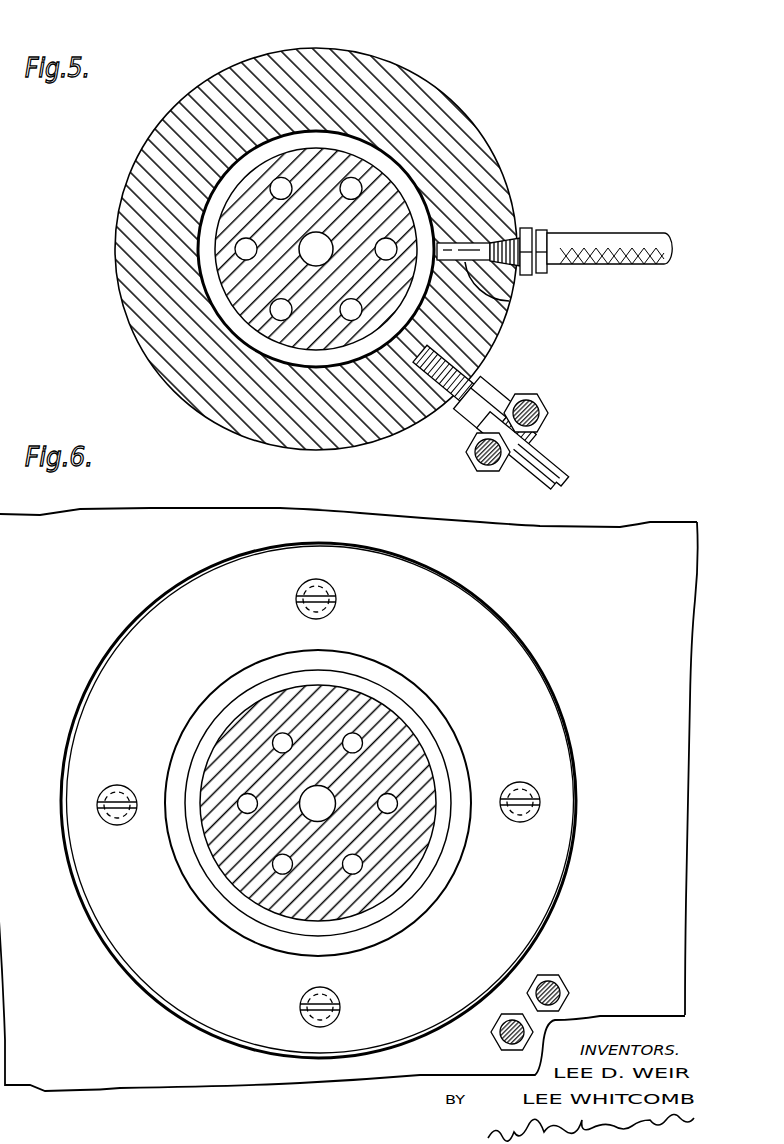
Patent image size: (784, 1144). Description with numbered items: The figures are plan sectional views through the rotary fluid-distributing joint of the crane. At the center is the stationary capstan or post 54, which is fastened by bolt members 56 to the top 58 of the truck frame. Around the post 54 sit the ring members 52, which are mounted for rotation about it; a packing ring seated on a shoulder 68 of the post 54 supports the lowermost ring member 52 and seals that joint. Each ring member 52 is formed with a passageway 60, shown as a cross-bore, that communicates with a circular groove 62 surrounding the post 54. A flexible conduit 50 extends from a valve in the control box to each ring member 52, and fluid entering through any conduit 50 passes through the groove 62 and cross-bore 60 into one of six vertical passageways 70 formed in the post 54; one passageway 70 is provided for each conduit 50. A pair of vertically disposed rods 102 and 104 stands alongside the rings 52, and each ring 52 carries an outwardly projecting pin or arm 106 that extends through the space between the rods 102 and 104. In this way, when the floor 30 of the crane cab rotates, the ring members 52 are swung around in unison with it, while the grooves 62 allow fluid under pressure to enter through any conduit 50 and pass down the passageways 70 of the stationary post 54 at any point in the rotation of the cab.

In FIG. 6, the floor 30 is at (637, 842).
In FIG. 5, the flexible conduit 50 is at (595, 240).
In FIG. 5, the ring member 52 is at (138, 329).
In FIG. 5, the stationary capstan or post 54 is at (243, 199).
In FIG. 6, the stationary capstan or post 54 is at (407, 740).
In FIG. 6, the bolt member 56 is at (300, 590).
In FIG. 6, the top of the truck frame 58 is at (302, 1060).
In FIG. 5, the passageway (cross-bore) 60 is at (509, 301).
In FIG. 5, the circular groove 62 is at (421, 188).
In FIG. 6, the shoulder 68 is at (300, 927).
In FIG. 5, the vertical passageway 70 is at (344, 185).
In FIG. 6, the vertical passageway 70 is at (344, 738).
In FIG. 5, the vertically disposed rod 102 is at (470, 464).
In FIG. 6, the vertically disposed rod 102 is at (497, 1040).
In FIG. 5, the vertically disposed rod 104 is at (549, 410).
In FIG. 6, the vertically disposed rod 104 is at (566, 993).
In FIG. 5, the outwardly projecting pin or arm 106 is at (554, 458).